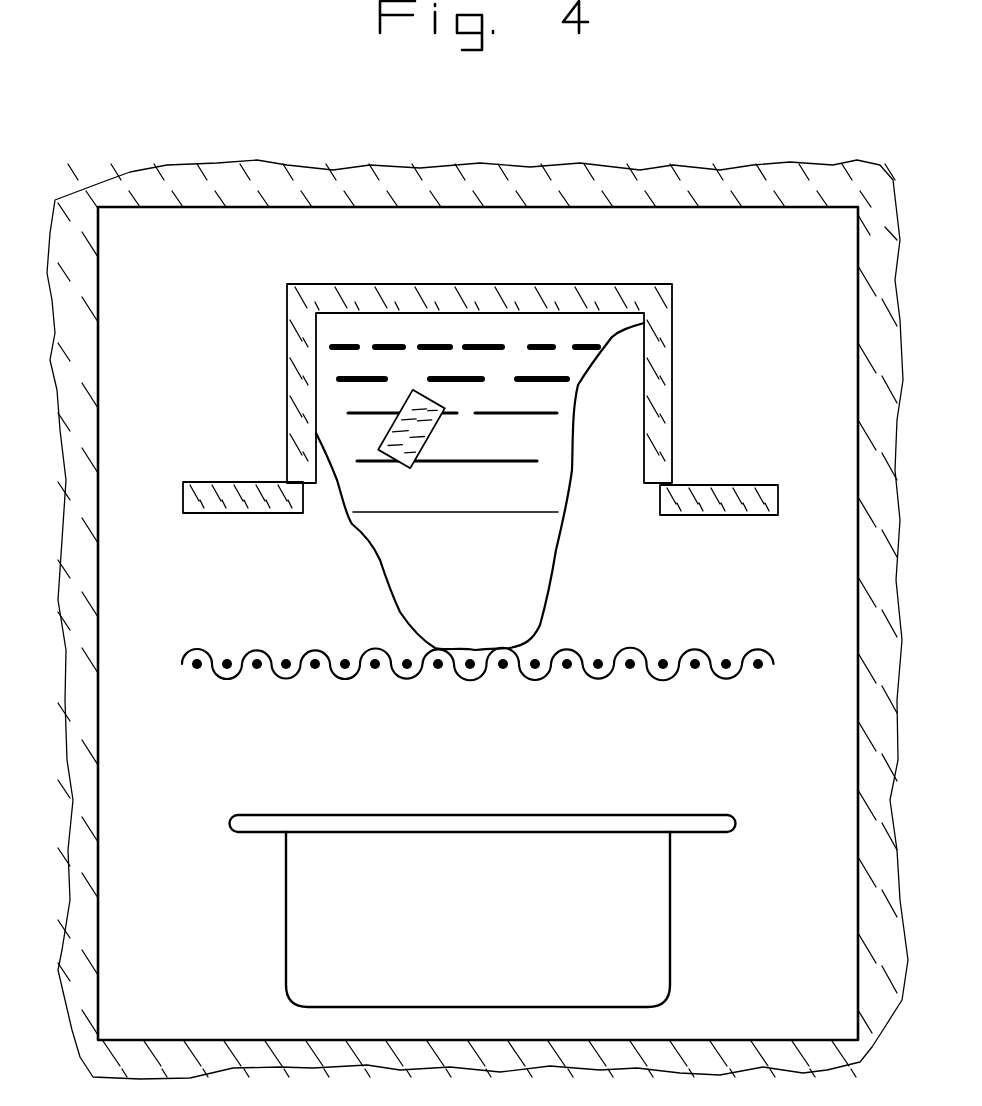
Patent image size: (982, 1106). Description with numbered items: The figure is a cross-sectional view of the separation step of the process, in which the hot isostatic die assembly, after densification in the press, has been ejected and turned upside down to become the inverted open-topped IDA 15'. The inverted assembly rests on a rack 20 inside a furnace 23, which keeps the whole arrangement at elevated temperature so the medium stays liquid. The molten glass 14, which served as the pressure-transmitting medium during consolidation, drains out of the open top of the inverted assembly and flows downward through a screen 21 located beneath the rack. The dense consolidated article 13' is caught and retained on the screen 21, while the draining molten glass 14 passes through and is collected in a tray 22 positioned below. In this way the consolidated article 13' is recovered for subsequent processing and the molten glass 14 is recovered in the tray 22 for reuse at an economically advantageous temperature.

The furnace 23 is at (173, 172).
The inverted open-topped IDA 15' is at (538, 383).
The rack 20 is at (183, 496).
The molten glass 14 is at (518, 347).
The consolidated article 13' is at (326, 425).
The screen 21 is at (700, 648).
The tray 22 is at (670, 928).